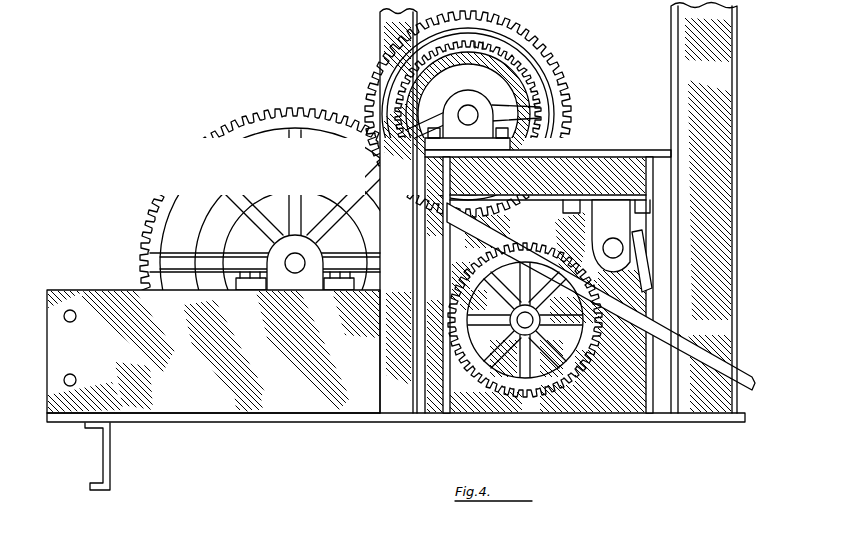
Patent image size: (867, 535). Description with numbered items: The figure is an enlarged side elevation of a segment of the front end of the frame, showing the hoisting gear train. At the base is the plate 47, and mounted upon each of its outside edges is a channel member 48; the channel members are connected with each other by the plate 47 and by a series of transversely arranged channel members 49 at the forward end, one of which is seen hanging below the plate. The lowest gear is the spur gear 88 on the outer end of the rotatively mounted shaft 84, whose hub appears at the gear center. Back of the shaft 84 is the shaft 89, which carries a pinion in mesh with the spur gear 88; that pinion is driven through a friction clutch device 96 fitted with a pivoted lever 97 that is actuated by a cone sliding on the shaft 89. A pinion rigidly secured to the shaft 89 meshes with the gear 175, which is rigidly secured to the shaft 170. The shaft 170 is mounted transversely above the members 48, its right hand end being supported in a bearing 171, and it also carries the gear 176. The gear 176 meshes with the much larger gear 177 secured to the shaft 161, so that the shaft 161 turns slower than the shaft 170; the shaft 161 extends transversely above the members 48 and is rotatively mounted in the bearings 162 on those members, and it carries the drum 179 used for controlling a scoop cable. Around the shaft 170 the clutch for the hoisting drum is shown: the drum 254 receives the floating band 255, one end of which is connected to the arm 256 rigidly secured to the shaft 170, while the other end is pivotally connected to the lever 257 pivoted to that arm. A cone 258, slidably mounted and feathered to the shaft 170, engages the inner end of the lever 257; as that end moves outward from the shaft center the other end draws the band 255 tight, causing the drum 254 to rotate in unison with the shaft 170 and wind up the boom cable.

The gear 177 is at (300, 112).
The drum 179 is at (265, 225).
The shaft 161 is at (303, 254).
The bearings 162 is at (295, 282).
The channel member 48 is at (213, 351).
The plate 47 is at (319, 421).
The channel member 49 is at (110, 462).
The gear 176 is at (535, 77).
The floating band 255 is at (528, 58).
The drum 254 is at (501, 67).
The cone 258 is at (468, 114).
The arm 256 is at (516, 114).
The lever 257 is at (430, 113).
The gear 175 is at (570, 110).
The shaft 170 is at (482, 130).
The bearing 171 is at (467, 140).
The friction clutch device 96 is at (607, 246).
The shaft 89 is at (612, 249).
The pivoted lever 97 is at (634, 262).
The spur gear 88 is at (574, 375).
The shaft 84 is at (518, 323).